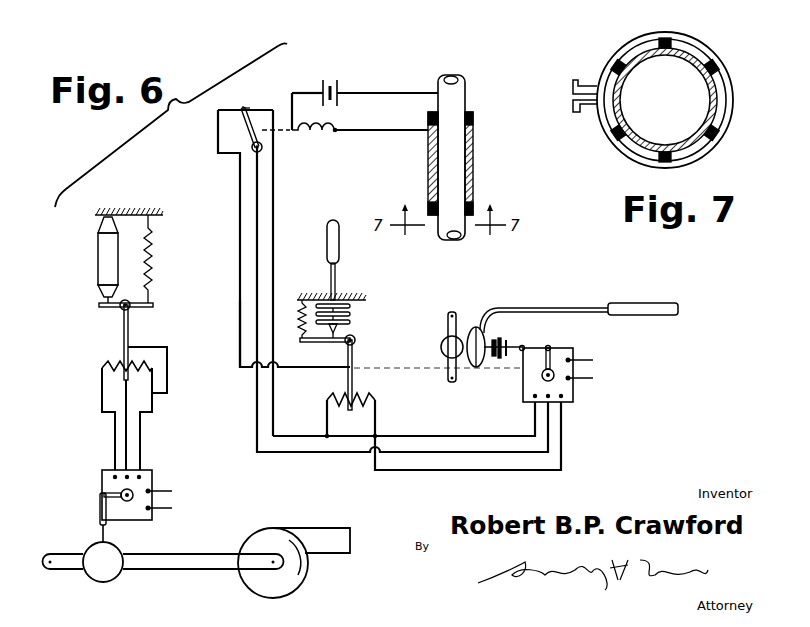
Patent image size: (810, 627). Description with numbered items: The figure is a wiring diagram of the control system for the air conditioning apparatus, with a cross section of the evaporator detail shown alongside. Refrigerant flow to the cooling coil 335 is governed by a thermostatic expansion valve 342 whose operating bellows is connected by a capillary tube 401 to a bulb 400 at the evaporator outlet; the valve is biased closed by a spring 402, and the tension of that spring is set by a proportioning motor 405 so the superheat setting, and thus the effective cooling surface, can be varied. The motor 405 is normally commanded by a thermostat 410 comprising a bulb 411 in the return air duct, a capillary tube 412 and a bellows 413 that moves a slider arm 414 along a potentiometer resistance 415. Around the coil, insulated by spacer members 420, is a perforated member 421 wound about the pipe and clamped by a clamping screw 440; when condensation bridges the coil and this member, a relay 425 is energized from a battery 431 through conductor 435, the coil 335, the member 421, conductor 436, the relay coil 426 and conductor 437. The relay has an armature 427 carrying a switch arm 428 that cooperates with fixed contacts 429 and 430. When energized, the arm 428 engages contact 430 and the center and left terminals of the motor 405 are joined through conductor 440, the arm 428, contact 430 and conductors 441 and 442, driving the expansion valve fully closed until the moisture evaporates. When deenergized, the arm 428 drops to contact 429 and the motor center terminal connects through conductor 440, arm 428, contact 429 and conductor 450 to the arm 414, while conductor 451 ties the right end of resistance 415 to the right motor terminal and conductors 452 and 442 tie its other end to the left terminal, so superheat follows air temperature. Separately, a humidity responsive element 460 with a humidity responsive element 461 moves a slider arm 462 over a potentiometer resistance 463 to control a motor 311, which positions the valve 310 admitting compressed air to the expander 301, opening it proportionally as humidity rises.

In FIG. 6, the expander 301 is at (296, 578).
In FIG. 6, the valve 310 is at (119, 550).
In FIG. 6, the motor 311 is at (151, 482).
In FIG. 6, the cooling coil 335 is at (461, 81).
In FIG. 6, the expansion valve 342 is at (441, 344).
In FIG. 6, the bulb 400 is at (636, 303).
In FIG. 6, the capillary tube 401 is at (537, 308).
In FIG. 6, the spring 402 is at (498, 357).
In FIG. 6, the proportioning motor 405 is at (567, 348).
In FIG. 6, the thermostat 410 is at (351, 281).
In FIG. 6, the bulb 411 is at (340, 248).
In FIG. 6, the capillary tube 412 is at (336, 284).
In FIG. 6, the bellows 413 is at (346, 319).
In FIG. 6, the slider arm 414 is at (353, 386).
In FIG. 6, the potentiometer resistance 415 is at (374, 401).
In FIG. 6, the spacer members 420 is at (471, 116).
In FIG. 7, the spacer members 420 is at (672, 40).
In FIG. 6, the perforated member 421 is at (474, 151).
In FIG. 6, the relay 425 is at (303, 155).
In FIG. 6, the relay coil 426 is at (336, 133).
In FIG. 6, the armature 427 is at (290, 124).
In FIG. 6, the switch arm 428 is at (252, 125).
In FIG. 6, the contact 429 is at (245, 111).
In FIG. 6, the contact 430 is at (254, 108).
In FIG. 6, the battery 431 is at (338, 84).
In FIG. 6, the conductor 435 is at (376, 93).
In FIG. 6, the conductor 436 is at (385, 130).
In FIG. 6, the conductor 437 is at (303, 92).
In FIG. 6, the conductor 440 is at (298, 453).
In FIG. 7, the conductor 440 is at (578, 112).
In FIG. 6, the conductor 441 is at (275, 240).
In FIG. 6, the conductor 442 is at (431, 436).
In FIG. 6, the conductor 450 is at (240, 348).
In FIG. 6, the conductor 451 is at (501, 471).
In FIG. 6, the conductor 452 is at (327, 418).
In FIG. 6, the humidity responsive element 460 is at (93, 259).
In FIG. 6, the humidity responsive element 461 is at (104, 275).
In FIG. 6, the slider arm 462 is at (130, 335).
In FIG. 6, the potentiometer resistance 463 is at (111, 362).